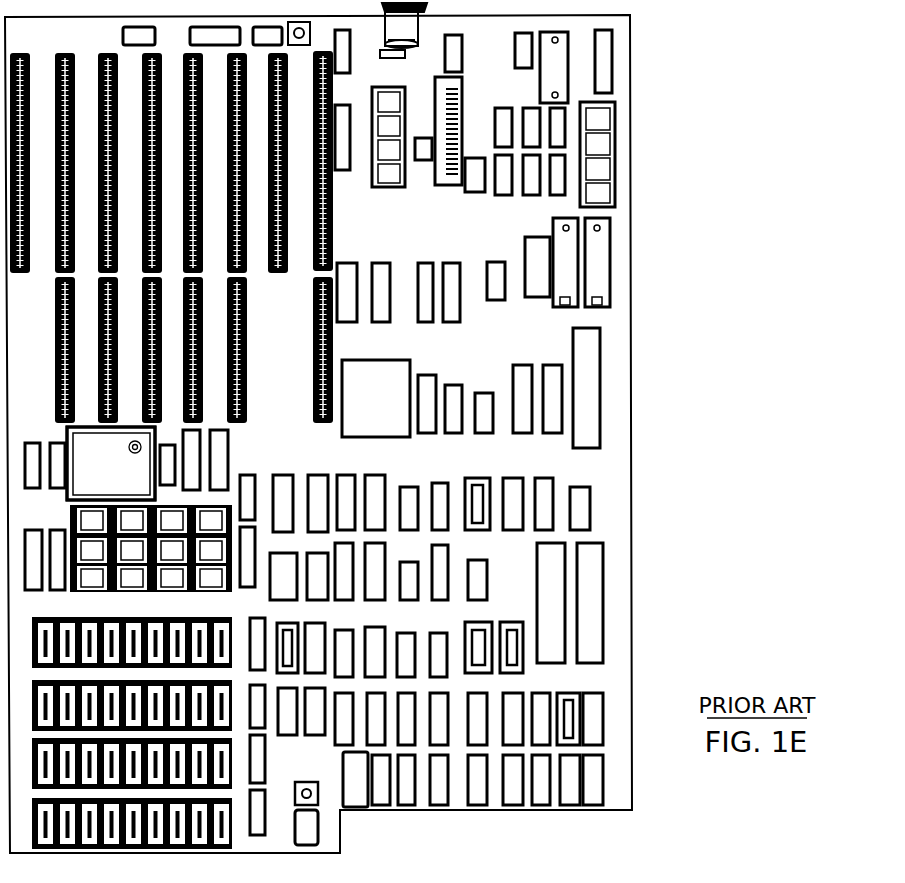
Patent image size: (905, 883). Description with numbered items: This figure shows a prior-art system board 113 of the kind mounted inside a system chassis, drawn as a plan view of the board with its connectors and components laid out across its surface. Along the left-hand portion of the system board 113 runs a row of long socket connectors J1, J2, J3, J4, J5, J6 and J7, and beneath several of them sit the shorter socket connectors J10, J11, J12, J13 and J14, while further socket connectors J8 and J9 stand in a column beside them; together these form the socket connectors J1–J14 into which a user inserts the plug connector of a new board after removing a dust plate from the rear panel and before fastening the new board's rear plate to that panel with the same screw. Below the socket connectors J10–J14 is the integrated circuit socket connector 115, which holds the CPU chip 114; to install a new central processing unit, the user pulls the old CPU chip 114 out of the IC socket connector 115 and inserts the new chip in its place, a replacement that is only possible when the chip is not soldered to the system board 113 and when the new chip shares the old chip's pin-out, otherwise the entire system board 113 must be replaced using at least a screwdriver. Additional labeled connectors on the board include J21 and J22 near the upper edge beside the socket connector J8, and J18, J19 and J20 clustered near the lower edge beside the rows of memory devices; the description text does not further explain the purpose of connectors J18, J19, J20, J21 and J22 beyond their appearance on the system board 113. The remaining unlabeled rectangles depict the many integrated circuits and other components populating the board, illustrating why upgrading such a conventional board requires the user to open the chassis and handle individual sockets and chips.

The system board 113 is at (607, 470).
The CPU chip 114 is at (92, 476).
The IC socket connector 115 is at (67, 437).
The socket connector J1 is at (29, 163).
The socket connector J2 is at (73, 163).
The socket connector J3 is at (117, 163).
The socket connector J4 is at (161, 163).
The socket connector J5 is at (202, 163).
The socket connector J6 is at (246, 163).
The socket connector J7 is at (287, 163).
The socket connector J8 is at (332, 161).
The socket connector J9 is at (332, 350).
The socket connector J10 is at (73, 350).
The socket connector J11 is at (117, 350).
The socket connector J12 is at (161, 350).
The socket connector J13 is at (202, 350).
The socket connector J14 is at (246, 350).
The connector J18 is at (311, 827).
The connector J19 is at (306, 777).
The connector J20 is at (342, 779).
The connector J21 is at (348, 122).
The connector J22 is at (352, 51).